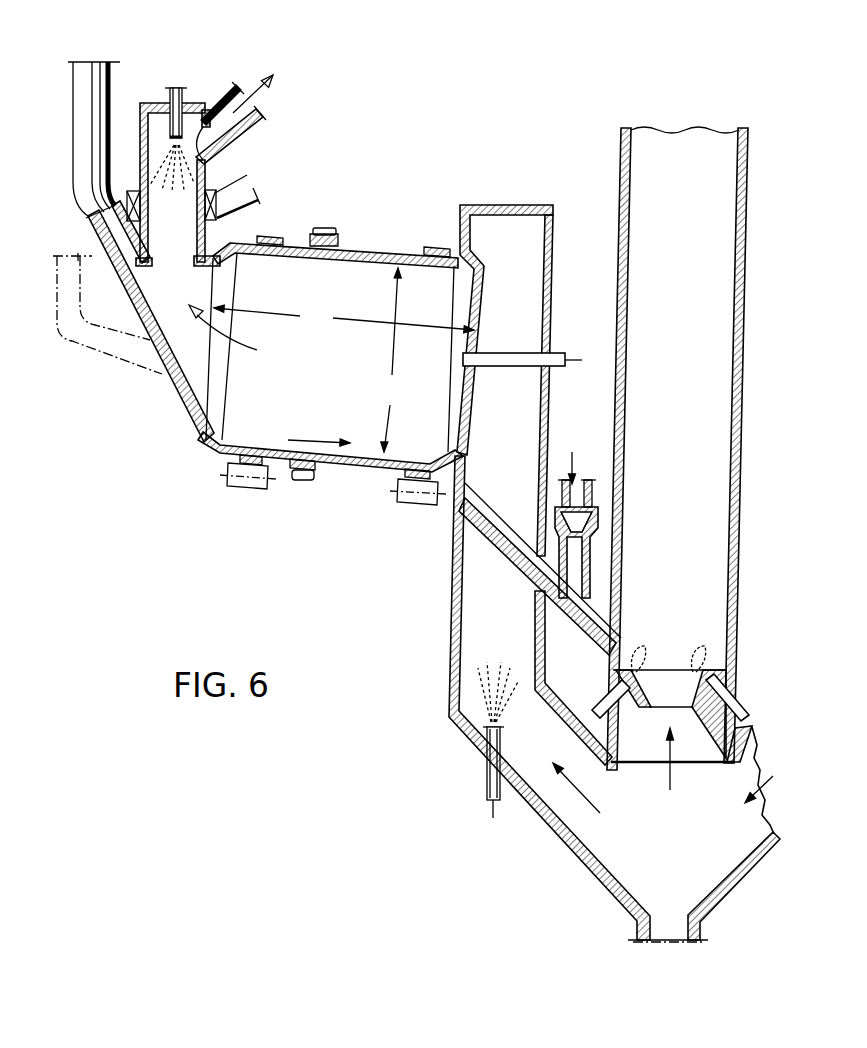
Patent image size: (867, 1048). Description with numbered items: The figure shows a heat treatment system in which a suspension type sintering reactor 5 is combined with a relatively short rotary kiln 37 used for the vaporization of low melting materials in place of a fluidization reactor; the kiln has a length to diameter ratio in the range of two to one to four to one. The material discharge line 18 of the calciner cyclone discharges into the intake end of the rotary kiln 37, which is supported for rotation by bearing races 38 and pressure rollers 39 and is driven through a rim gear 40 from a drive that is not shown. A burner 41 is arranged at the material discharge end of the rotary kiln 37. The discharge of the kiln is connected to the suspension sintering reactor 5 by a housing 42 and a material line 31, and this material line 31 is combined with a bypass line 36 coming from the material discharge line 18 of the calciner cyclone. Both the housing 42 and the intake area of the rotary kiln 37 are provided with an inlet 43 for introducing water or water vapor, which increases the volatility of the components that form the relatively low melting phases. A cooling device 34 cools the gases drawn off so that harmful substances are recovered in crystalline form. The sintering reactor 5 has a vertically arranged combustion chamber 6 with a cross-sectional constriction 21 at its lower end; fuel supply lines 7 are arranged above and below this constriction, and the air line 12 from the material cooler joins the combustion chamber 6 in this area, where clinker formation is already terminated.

The material discharge line 18 is at (88, 72).
The inlet 43 is at (177, 88).
The cooling device 34 is at (250, 186).
The rim gear 40 is at (322, 228).
The rotary kiln 37 is at (324, 383).
The bearing races 38 is at (232, 456).
The pressure rollers 39 is at (253, 490).
The burner 41 is at (506, 367).
The housing 42 is at (499, 604).
The material line 31 is at (485, 504).
The bypass line 36 is at (578, 480).
The suspension sintering reactor 5 is at (746, 228).
The combustion chamber 6 is at (684, 406).
The cross-sectional constriction 21 is at (657, 728).
The fuel supply lines 7 is at (589, 712).
The air line 12 is at (735, 850).